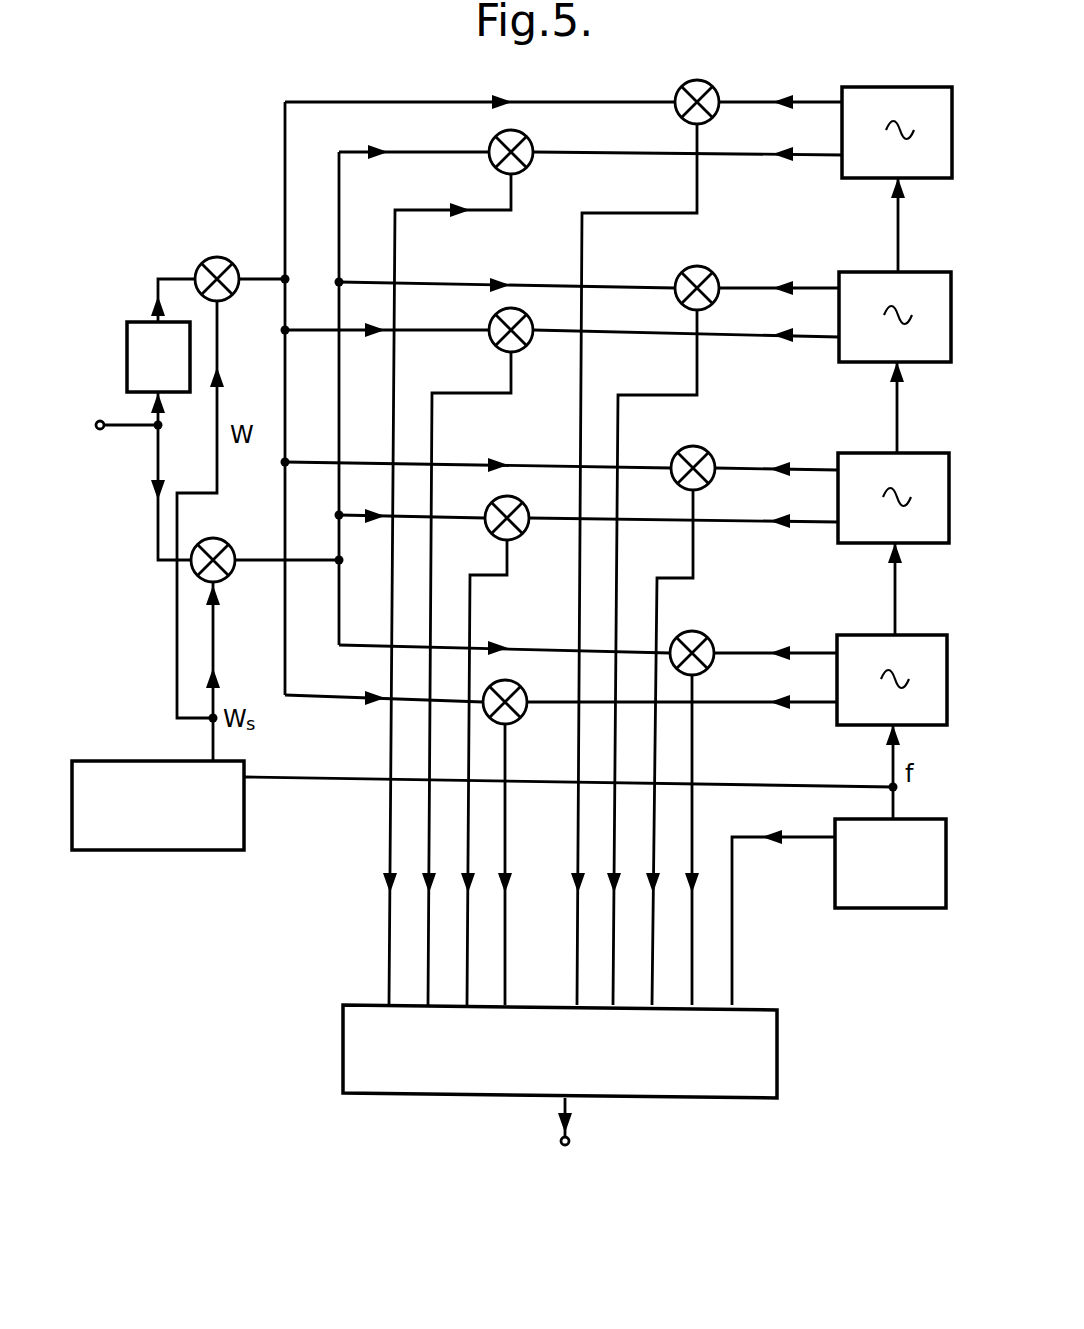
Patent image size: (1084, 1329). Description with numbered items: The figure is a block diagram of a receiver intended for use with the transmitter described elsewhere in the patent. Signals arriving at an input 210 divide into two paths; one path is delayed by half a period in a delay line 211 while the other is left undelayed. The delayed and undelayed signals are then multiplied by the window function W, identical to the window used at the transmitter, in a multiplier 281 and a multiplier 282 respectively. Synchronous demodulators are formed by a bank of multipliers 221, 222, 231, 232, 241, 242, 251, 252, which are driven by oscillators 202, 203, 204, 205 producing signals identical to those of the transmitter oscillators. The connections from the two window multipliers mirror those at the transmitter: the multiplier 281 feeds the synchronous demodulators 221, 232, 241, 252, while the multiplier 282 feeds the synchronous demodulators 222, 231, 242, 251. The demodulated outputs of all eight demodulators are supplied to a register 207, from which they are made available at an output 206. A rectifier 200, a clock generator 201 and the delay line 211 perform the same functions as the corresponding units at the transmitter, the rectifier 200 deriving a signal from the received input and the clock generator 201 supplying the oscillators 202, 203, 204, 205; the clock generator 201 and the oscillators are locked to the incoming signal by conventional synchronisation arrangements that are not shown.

The rectifier 200 is at (212, 852).
The clock generator 201 is at (835, 862).
The oscillator 202 is at (882, 87).
The oscillator 203 is at (870, 272).
The oscillator 204 is at (868, 453).
The oscillator 205 is at (865, 635).
The output 206 is at (571, 1141).
The register 207 is at (777, 1048).
The input 210 is at (102, 430).
The delay line 211 is at (128, 333).
The multiplier 221 is at (681, 84).
The multiplier 222 is at (496, 134).
The multiplier 231 is at (682, 268).
The multiplier 232 is at (498, 314).
The multiplier 241 is at (705, 451).
The multiplier 242 is at (519, 501).
The multiplier 251 is at (703, 636).
The multiplier 252 is at (519, 685).
The multiplier 281 is at (218, 256).
The multiplier 282 is at (231, 578).